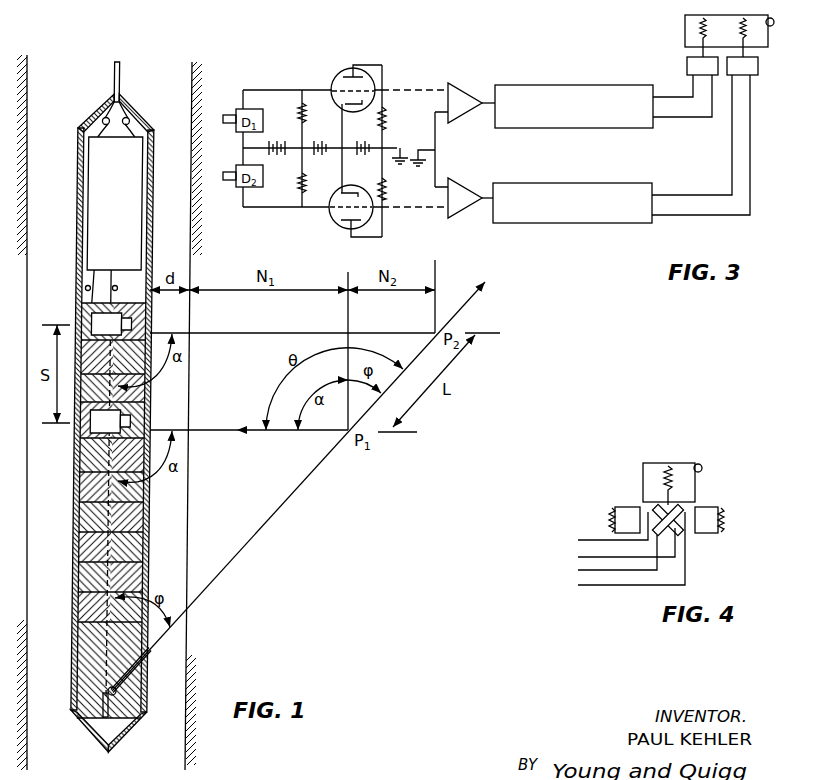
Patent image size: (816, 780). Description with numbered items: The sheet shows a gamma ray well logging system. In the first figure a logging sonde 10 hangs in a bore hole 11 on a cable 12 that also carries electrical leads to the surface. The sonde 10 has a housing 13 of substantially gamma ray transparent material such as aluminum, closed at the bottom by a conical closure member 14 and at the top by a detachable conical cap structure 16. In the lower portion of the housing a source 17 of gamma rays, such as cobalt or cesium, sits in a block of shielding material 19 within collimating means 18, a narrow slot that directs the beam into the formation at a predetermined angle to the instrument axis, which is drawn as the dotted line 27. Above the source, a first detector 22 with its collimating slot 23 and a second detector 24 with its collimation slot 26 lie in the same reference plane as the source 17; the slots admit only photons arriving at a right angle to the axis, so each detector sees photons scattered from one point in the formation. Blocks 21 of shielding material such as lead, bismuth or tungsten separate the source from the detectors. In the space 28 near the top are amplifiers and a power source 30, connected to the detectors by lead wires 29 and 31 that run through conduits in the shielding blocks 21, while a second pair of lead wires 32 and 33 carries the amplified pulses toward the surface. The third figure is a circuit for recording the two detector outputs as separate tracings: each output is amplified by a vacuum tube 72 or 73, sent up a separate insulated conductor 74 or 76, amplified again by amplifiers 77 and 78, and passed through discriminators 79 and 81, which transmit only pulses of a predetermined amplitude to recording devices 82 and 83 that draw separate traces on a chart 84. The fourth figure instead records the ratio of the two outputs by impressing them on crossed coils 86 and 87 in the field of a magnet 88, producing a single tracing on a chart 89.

In FIG. 1, the logging sonde 10 is at (93, 102).
In FIG. 1, the bore hole 11 is at (109, 405).
In FIG. 1, the cable 12 is at (117, 68).
In FIG. 1, the housing 13 is at (152, 225).
In FIG. 1, the conical closure member 14 is at (122, 739).
In FIG. 1, the conical cap structure 16 is at (116, 108).
In FIG. 1, the source of gamma rays 17 is at (117, 692).
In FIG. 1, the collimating means 18 is at (133, 672).
In FIG. 1, the block of shielding material 19 is at (88, 643).
In FIG. 1, the blocks of shielding material 21 is at (90, 497).
In FIG. 1, the first detector 22 is at (93, 432).
In FIG. 1, the collimating slot 23 is at (130, 421).
In FIG. 1, the second detector 24 is at (92, 320).
In FIG. 1, the collimation slot 26 is at (130, 326).
In FIG. 1, the axis of the instrument 27 is at (100, 548).
In FIG. 1, the space 28 is at (143, 302).
In FIG. 1, the lead wire 29 is at (95, 285).
In FIG. 1, the amplifiers and power source 30 is at (132, 147).
In FIG. 1, the lead wire 31 is at (96, 276).
In FIG. 1, the lead wire 32 is at (100, 121).
In FIG. 1, the lead wire 33 is at (130, 121).
In FIG. 3, the vacuum tube 72 is at (333, 82).
In FIG. 3, the vacuum tube 73 is at (333, 226).
In FIG. 3, the insulated conductor 74 is at (421, 91).
In FIG. 3, the insulated conductor 76 is at (400, 206).
In FIG. 3, the amplifier 77 is at (463, 91).
In FIG. 3, the amplifier 78 is at (458, 184).
In FIG. 3, the discriminator 79 is at (634, 129).
In FIG. 3, the discriminator 81 is at (604, 224).
In FIG. 3, the recording device 82 is at (687, 67).
In FIG. 3, the recording device 83 is at (759, 68).
In FIG. 3, the chart 84 is at (688, 28).
In FIG. 4, the crossed coil 86 is at (640, 540).
In FIG. 4, the crossed coil 87 is at (681, 532).
In FIG. 4, the magnet 88 is at (721, 507).
In FIG. 4, the chart 89 is at (643, 480).